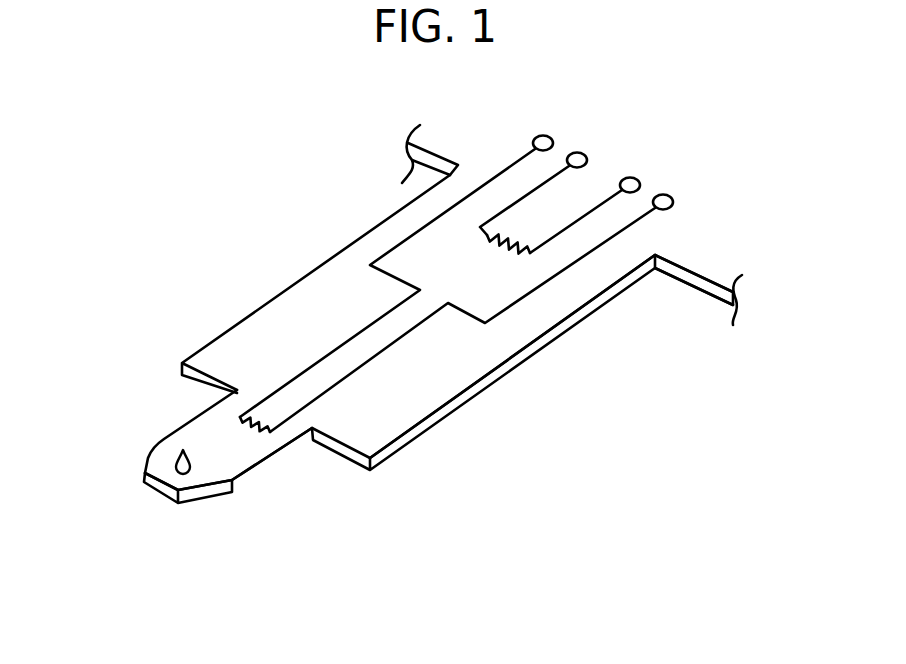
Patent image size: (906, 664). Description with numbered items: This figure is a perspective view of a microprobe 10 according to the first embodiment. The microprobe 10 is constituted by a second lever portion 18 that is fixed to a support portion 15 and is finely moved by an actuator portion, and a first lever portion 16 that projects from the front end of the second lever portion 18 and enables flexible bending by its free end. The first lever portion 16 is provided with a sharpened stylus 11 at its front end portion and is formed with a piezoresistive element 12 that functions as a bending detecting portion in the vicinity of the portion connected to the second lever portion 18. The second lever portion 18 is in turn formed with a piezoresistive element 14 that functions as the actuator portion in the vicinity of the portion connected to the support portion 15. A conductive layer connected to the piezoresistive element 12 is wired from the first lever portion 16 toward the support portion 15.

The microprobe 10 is at (236, 201).
The sharpened stylus 11 is at (173, 467).
The piezoresistive element 12 is at (258, 434).
The piezoresistive element 14 is at (495, 250).
The support portion 15 is at (713, 262).
The first lever portion 16 is at (397, 482).
The second lever portion 18 is at (670, 290).